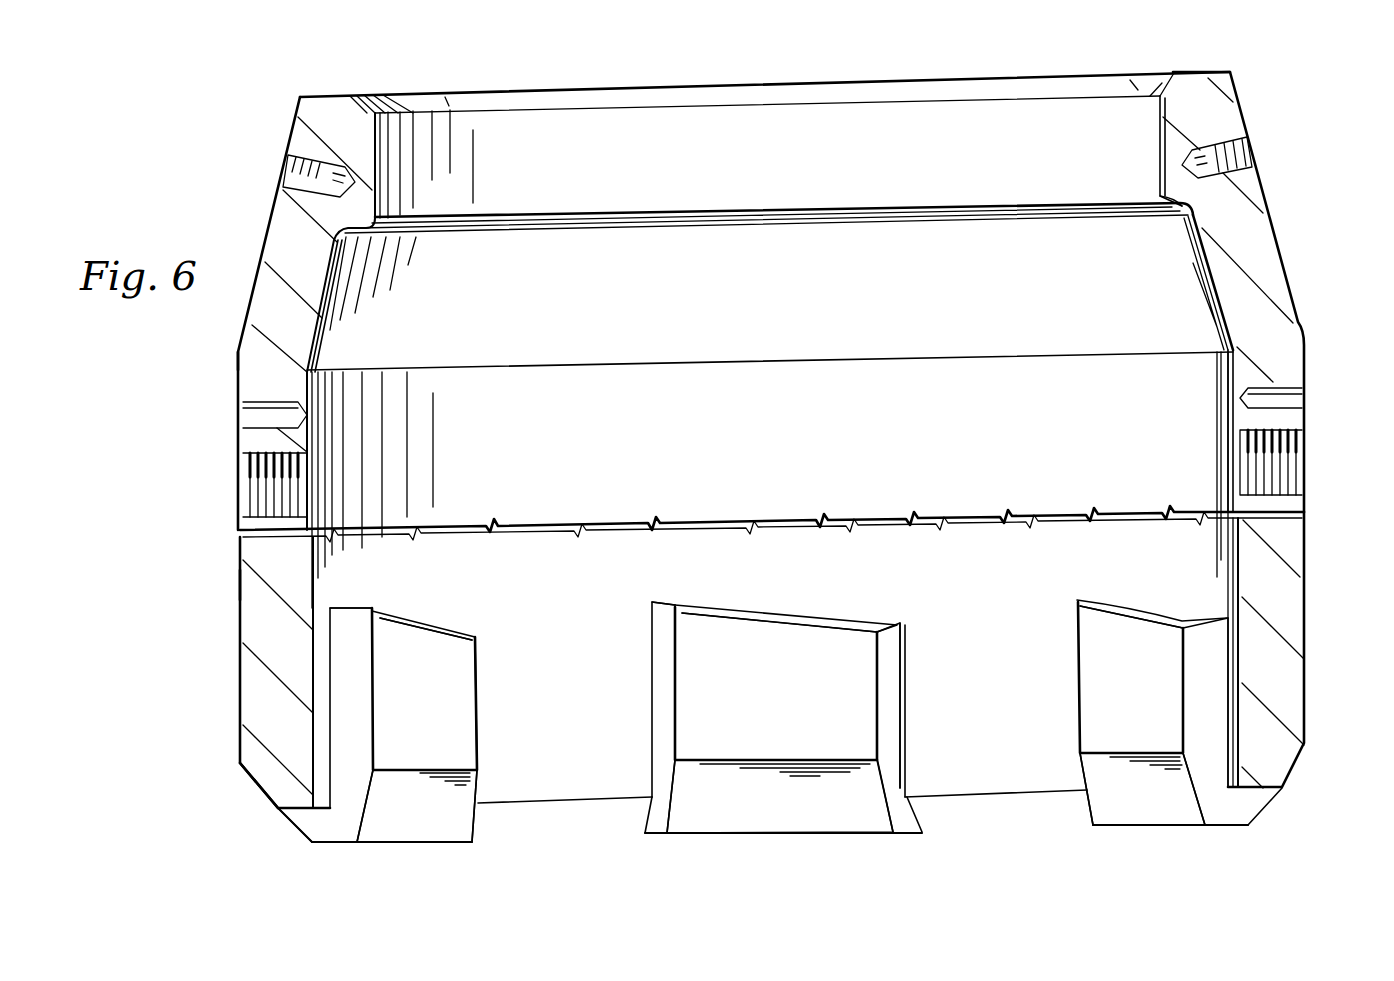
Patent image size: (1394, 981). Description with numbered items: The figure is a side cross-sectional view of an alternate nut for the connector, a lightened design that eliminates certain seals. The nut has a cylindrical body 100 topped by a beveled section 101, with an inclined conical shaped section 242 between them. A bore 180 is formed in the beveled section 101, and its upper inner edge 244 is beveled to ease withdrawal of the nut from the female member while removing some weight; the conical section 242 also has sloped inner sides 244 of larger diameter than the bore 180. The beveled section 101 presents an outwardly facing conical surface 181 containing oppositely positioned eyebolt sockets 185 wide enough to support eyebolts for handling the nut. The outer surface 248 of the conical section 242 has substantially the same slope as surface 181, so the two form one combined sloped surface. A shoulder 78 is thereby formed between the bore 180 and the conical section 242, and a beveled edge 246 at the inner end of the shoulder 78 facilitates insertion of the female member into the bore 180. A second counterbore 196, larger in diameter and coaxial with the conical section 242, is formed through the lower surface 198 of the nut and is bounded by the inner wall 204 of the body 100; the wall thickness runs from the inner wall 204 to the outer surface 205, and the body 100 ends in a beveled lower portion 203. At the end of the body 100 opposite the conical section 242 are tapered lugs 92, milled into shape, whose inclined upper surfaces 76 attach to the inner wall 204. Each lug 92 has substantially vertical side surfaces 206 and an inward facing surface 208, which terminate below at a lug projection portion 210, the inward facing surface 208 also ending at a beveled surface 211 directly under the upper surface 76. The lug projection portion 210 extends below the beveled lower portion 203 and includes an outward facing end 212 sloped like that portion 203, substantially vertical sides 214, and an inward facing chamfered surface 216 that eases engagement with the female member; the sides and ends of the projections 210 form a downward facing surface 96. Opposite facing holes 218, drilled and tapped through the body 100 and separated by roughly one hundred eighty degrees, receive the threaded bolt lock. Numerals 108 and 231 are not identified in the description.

The upper surface of lug 76 is at (452, 623).
The shoulder 78 is at (1182, 217).
The tapered lug 92 is at (342, 837).
The downward facing surface 96 is at (427, 843).
The body 100 is at (258, 610).
The beveled section 101 is at (316, 100).
The pocket top edge 108 is at (328, 605).
The bore 180 is at (1157, 110).
The beveled outer surface 181 is at (297, 104).
The eyebolt socket 185 is at (1197, 148).
The second counterbore 196 is at (1223, 547).
The lower surface 198 is at (1273, 787).
The beveled lower portion 203 is at (257, 783).
The inner wall 204 is at (1157, 443).
The outer surface 205 is at (240, 583).
The side surface of lug 206 is at (340, 647).
The inward facing surface of lug 208 is at (453, 667).
The lug projection portion 210 is at (397, 812).
The beveled surface 211 is at (388, 610).
The outward facing end 212 is at (302, 833).
The vertical side of lug projection 214 is at (328, 833).
The chamfered surface 216 is at (465, 817).
The hole 218 is at (1287, 488).
The clamp screw 231 is at (252, 417).
The conical shaped section 242 is at (338, 240).
The beveled upper inner edge 244 is at (368, 92).
The beveled edge 246 is at (1153, 217).
The outer surface of conical section 248 is at (246, 312).